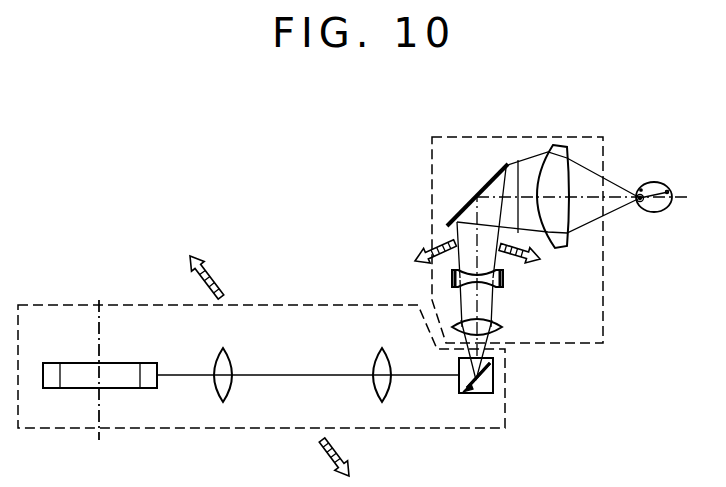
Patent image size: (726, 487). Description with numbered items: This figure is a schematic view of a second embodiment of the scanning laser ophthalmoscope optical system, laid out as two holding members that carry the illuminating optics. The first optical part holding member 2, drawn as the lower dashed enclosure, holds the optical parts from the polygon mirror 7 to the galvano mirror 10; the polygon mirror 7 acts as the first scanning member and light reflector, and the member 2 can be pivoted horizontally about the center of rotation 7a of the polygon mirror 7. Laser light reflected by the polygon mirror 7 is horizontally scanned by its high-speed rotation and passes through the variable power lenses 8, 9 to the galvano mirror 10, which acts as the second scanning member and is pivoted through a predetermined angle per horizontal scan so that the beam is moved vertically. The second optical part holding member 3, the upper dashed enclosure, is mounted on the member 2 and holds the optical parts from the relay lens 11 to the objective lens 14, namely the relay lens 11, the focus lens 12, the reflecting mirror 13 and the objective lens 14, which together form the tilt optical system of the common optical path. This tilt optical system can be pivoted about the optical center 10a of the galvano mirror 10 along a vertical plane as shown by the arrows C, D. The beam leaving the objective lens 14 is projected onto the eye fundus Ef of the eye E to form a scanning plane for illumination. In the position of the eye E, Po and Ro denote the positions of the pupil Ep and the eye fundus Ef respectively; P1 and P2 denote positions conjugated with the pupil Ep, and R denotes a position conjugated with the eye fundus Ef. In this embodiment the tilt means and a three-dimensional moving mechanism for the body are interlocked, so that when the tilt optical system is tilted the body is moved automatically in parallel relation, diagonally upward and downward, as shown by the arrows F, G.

The first optical part holding member 2 is at (182, 430).
The second optical part holding member 3 is at (565, 347).
The polygon mirror 7 is at (147, 362).
The center of rotation 7a is at (97, 418).
The variable power lens 8 is at (231, 362).
The variable power lens 9 is at (374, 362).
The galvano mirror 10 is at (477, 395).
The optical center 10a is at (491, 397).
The relay lens 11 is at (503, 328).
The focus lens 12 is at (503, 284).
The reflecting mirror 13 is at (490, 174).
The objective lens 14 is at (553, 146).
The position conjugated with the eye fundus R is at (518, 160).
The position conjugated with the pupil P1 is at (487, 378).
The position conjugated with the pupil P2 is at (157, 382).
The position of the pupil Po is at (642, 184).
The position of the eye fundus Ro is at (668, 182).
The eye fundus Ef is at (669, 191).
The pupil Ep is at (639, 204).
The eye E is at (666, 210).
The arrow C is at (430, 247).
The arrow D is at (538, 254).
The arrow F is at (214, 279).
The arrow G is at (320, 448).